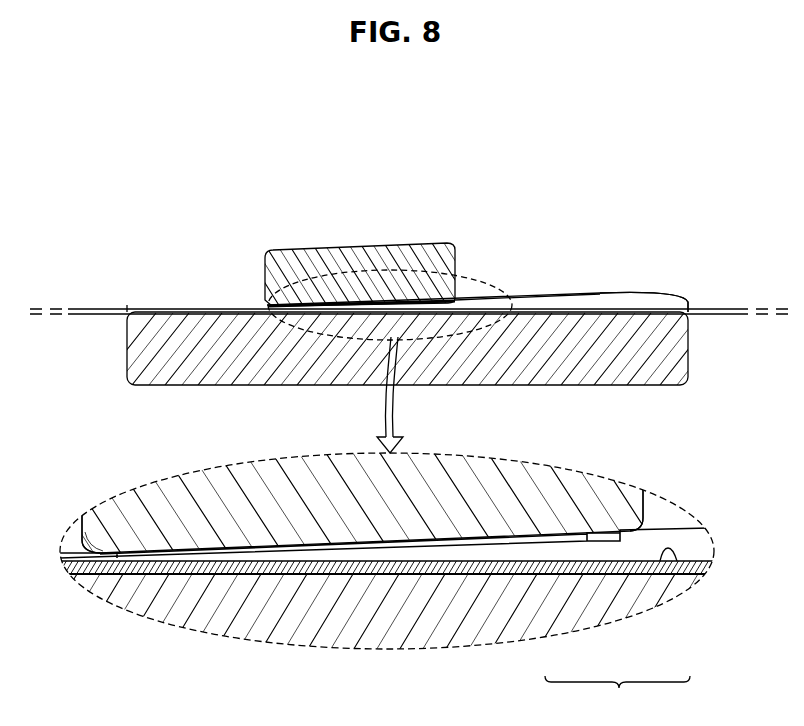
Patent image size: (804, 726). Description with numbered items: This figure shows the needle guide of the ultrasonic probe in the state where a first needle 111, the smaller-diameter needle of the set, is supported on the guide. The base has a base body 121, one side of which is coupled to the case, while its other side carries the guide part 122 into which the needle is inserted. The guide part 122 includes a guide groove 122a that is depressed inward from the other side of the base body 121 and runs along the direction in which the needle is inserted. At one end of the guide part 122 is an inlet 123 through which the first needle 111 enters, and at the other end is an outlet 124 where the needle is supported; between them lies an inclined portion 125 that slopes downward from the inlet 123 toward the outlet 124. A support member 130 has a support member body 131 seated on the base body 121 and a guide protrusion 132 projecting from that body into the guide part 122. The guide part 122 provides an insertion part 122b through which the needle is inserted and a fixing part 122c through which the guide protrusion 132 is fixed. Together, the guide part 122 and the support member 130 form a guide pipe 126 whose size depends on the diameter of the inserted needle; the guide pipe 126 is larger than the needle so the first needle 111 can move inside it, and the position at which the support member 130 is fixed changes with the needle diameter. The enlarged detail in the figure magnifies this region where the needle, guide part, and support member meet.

The first needle 111 is at (710, 310).
The base body 121 is at (505, 348).
The guide part 122 is at (153, 148).
The guide groove 122a is at (617, 693).
The insertion part 122b is at (668, 562).
The fixing part 122c is at (568, 570).
The inlet 123 is at (687, 307).
The outlet 124 is at (126, 300).
The inclined portion 125 is at (507, 312).
The guide pipe 126 is at (502, 552).
The support member 130 is at (273, 248).
The support member body 131 is at (200, 513).
The guide protrusion 132 is at (290, 548).